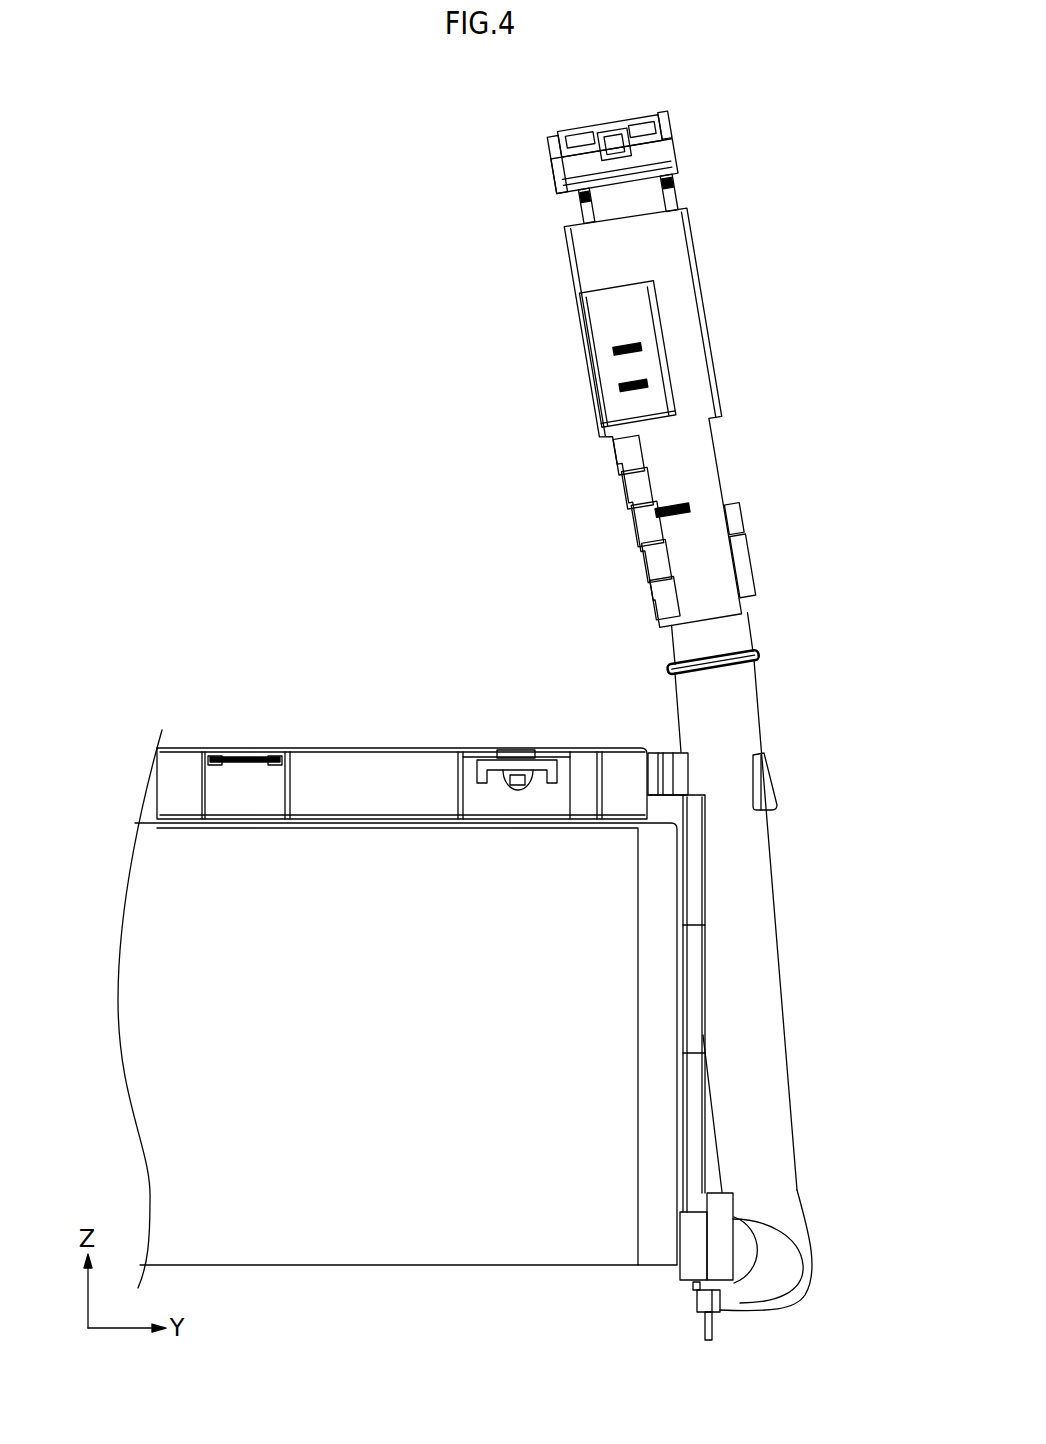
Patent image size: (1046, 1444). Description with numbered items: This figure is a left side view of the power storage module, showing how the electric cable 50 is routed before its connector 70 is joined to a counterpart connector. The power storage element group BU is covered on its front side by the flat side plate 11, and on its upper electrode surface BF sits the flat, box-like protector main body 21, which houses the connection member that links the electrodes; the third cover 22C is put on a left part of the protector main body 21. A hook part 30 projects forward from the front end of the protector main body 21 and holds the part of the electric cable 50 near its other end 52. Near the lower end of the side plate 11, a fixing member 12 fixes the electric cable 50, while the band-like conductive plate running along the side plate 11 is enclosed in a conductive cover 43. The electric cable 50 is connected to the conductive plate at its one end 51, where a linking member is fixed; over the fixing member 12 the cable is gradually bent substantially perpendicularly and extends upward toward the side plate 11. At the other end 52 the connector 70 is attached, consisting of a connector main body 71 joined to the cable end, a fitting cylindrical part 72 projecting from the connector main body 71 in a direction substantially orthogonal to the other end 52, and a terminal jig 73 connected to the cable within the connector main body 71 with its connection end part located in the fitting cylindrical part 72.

The side plate 11 is at (684, 1096).
The fixing member 12 is at (808, 1287).
The protector main body 21 is at (157, 824).
The third cover 22C is at (480, 748).
The hook part 30 is at (655, 752).
The conductive cover 43 is at (706, 866).
The electric cable 50 is at (781, 975).
The one end 51 is at (740, 1252).
The other end 52 is at (752, 632).
The connector 70 is at (688, 371).
The connector main body 71 is at (700, 283).
The fitting cylindrical part 72 is at (667, 340).
The terminal jig 73 is at (632, 384).
The electrode surface BF is at (228, 822).
The power storage element group BU is at (405, 1266).